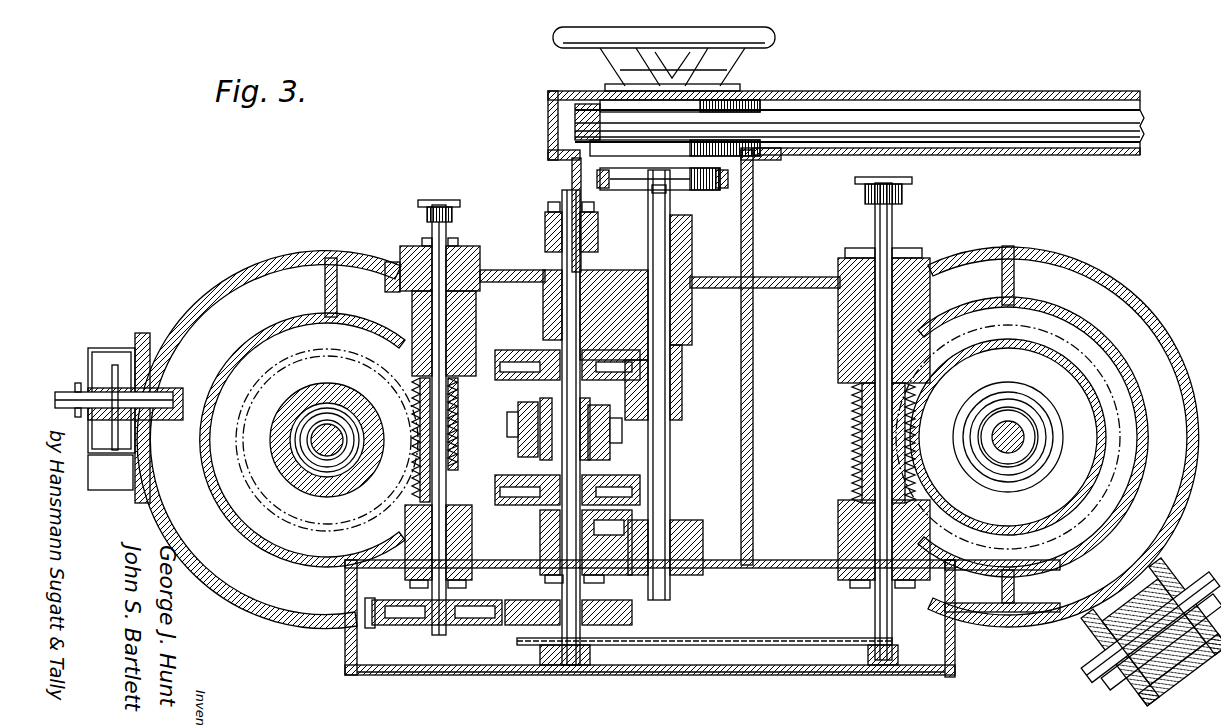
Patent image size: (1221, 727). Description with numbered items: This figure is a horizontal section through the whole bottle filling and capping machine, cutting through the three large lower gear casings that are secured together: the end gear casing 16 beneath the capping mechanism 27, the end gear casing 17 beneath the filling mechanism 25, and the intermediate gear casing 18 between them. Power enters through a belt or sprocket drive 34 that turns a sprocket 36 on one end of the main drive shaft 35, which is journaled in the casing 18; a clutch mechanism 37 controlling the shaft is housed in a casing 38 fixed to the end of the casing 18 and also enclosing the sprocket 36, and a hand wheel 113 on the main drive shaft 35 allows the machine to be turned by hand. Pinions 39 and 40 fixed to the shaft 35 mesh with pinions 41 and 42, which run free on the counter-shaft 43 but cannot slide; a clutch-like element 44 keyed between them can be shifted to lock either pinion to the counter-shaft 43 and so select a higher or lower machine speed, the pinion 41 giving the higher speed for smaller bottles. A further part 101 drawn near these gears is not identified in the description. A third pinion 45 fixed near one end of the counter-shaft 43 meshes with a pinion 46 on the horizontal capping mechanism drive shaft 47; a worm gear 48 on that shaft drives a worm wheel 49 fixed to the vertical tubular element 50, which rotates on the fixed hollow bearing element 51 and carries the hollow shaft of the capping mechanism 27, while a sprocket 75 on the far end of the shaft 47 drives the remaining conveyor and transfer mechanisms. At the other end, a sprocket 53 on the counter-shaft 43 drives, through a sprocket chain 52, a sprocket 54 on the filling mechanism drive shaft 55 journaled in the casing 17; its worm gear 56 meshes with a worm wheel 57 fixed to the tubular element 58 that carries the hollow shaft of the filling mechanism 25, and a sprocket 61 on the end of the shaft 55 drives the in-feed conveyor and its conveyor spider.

The hand wheel 113 is at (562, 40).
The sprocket 36 is at (707, 115).
The belt or sprocket drive 34 is at (815, 110).
The casing 38 is at (572, 180).
The clutch mechanism 37 is at (600, 180).
The main drive shaft 35 is at (667, 262).
The sprocket 75 is at (440, 200).
The sprocket 61 is at (900, 182).
The filling mechanism drive shaft 55 is at (884, 229).
The gear casing 18 is at (753, 348).
The pinion 39 is at (685, 380).
The pinion 41 is at (522, 338).
The clutch-like element 44 is at (520, 412).
The worm gear 48 is at (456, 450).
The pinion 42 is at (500, 478).
The pinion 101 is at (606, 436).
The pinion 40 is at (672, 475).
The counter-shaft 43 is at (545, 530).
The capping mechanism drive shaft 47 is at (430, 540).
The worm wheel 49 is at (326, 386).
The capping mechanism 27 is at (302, 440).
The tubular element 50 is at (300, 462).
The bearing element 51 is at (322, 470).
The gear casing 16 is at (176, 482).
The pinion 46 is at (352, 612).
The third pinion 45 is at (505, 628).
The sprocket 53 is at (568, 665).
The sprocket chain 52 is at (700, 646).
The sprocket 54 is at (884, 648).
The worm gear 56 is at (850, 448).
The worm wheel 57 is at (916, 412).
The tubular element 58 is at (1040, 348).
The filling mechanism 25 is at (1024, 437).
The gear casing 17 is at (1138, 322).